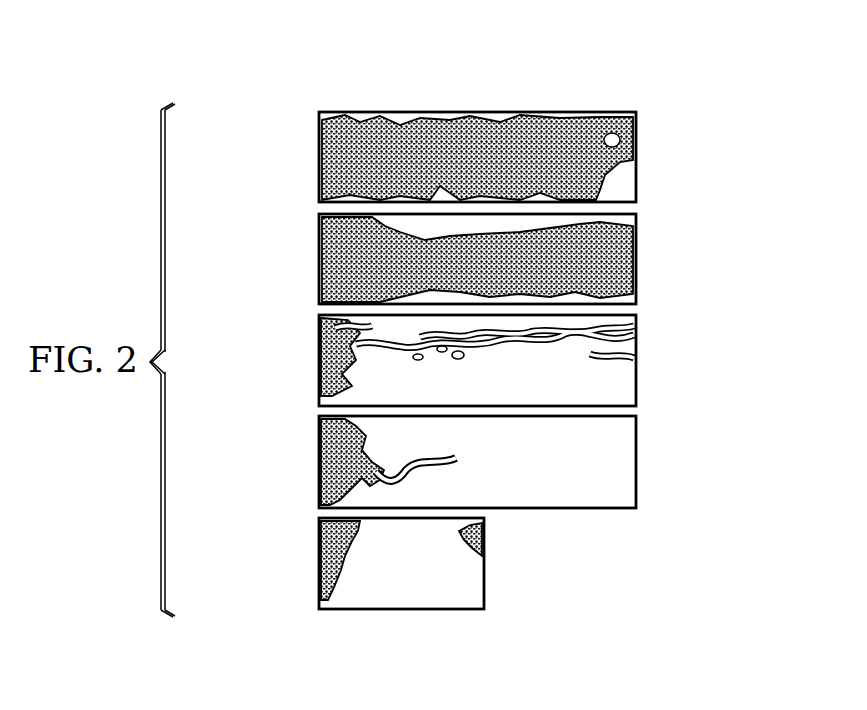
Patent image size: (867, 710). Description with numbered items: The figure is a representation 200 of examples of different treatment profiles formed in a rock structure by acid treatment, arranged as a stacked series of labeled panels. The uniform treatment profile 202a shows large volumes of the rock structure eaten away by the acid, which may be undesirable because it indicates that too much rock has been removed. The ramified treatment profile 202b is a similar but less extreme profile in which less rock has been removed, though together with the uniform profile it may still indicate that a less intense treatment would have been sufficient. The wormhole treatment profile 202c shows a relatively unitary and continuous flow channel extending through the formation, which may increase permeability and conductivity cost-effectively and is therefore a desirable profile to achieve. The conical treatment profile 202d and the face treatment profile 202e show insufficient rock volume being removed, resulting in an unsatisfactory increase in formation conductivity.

The representation 200 is at (574, 88).
The uniform treatment profile 202a is at (636, 159).
The ramified treatment profile 202b is at (636, 257).
The wormhole treatment profile 202c is at (636, 356).
The conical treatment profile 202d is at (636, 460).
The face treatment profile 202e is at (484, 560).